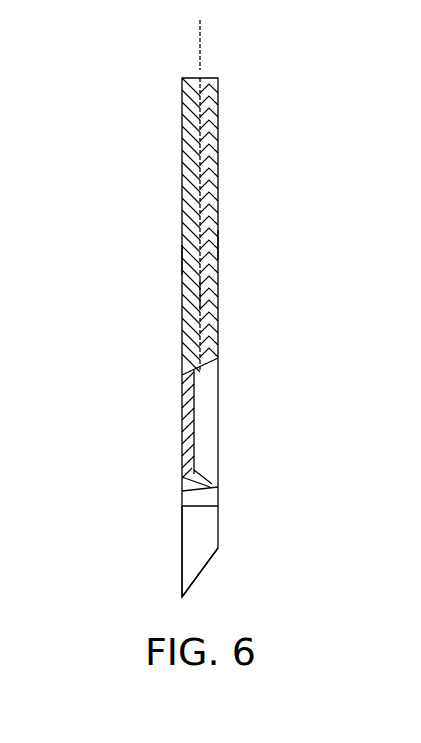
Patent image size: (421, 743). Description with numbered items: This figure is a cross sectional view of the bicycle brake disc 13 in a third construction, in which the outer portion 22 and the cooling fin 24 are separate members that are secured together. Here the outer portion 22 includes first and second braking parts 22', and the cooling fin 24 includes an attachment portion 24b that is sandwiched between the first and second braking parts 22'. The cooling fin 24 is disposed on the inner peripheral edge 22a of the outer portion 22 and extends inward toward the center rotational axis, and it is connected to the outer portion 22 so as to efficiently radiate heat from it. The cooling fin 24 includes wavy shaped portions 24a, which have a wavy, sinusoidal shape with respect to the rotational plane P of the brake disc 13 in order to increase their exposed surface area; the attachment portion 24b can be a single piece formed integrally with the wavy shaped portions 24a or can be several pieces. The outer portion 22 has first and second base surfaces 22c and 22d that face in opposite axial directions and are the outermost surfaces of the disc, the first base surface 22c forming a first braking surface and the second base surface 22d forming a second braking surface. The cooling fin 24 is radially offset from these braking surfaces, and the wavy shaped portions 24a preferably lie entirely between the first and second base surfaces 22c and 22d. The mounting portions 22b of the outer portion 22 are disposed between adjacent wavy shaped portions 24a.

The bicycle brake disc 13 is at (128, 172).
The rotational plane P is at (203, 37).
The outer portion 22 is at (202, 337).
The first and second braking parts 22' is at (166, 225).
The inner peripheral edge 22a is at (215, 362).
The mounting portions 22b is at (198, 535).
The first base surface 22c is at (182, 260).
The second base surface 22d is at (218, 246).
The cooling fin 24 is at (181, 417).
The wavy shaped portions 24a is at (207, 450).
The attachment portion 24b is at (212, 295).